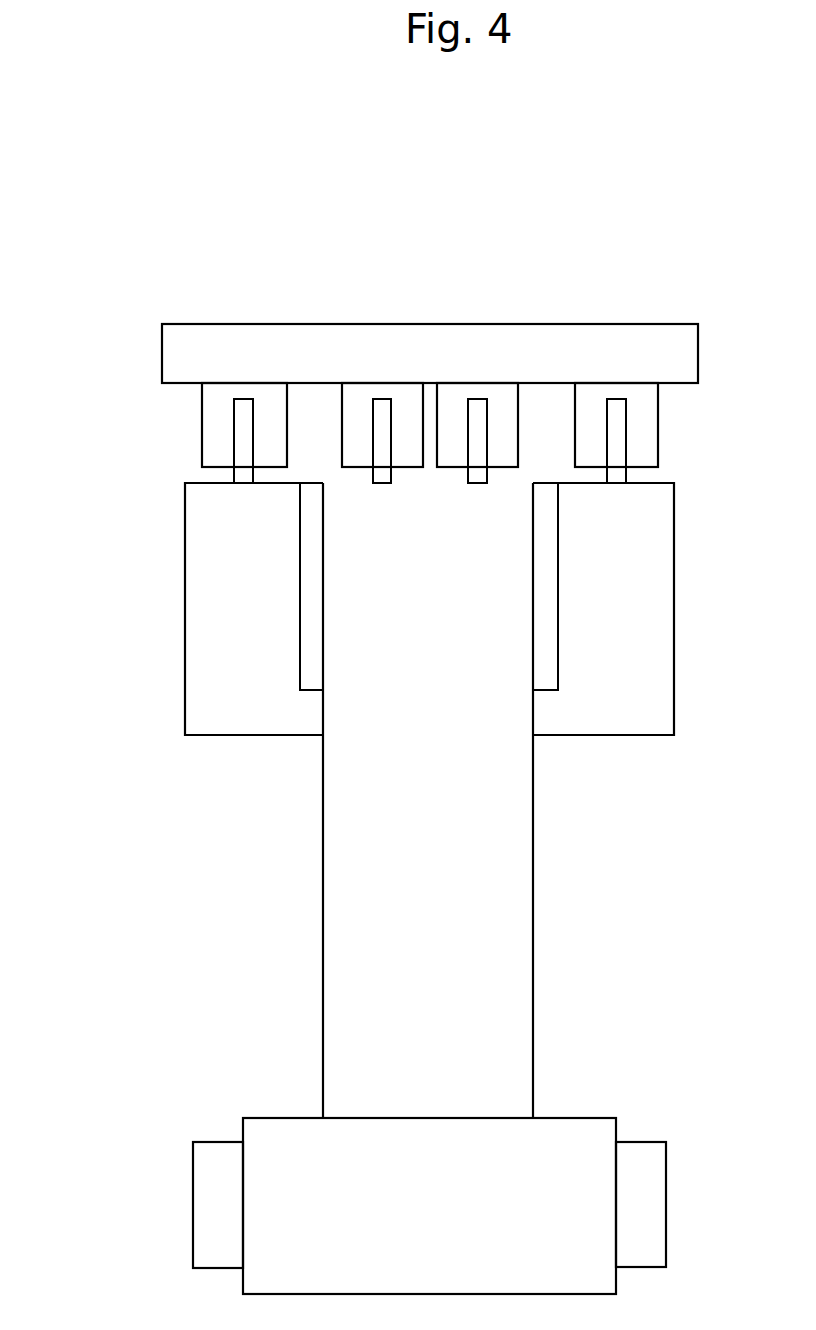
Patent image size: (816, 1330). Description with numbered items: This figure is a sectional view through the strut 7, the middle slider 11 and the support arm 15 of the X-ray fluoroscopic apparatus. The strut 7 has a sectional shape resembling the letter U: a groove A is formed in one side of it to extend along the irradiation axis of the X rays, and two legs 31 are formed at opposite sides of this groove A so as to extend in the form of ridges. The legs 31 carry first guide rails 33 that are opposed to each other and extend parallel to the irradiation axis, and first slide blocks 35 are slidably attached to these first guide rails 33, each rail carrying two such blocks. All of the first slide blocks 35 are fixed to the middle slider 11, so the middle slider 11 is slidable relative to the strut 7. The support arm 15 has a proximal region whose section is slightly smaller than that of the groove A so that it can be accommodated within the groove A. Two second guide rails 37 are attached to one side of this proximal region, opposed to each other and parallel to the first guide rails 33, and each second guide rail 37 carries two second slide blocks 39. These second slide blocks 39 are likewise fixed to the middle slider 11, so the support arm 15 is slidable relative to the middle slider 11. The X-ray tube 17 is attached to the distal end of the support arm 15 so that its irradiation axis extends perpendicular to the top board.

The middle slider 11 is at (698, 338).
The second slide blocks 39 is at (202, 432).
The first slide blocks 35 is at (342, 425).
The second guide rails 37 is at (253, 473).
The first guide rails 33 is at (391, 473).
The strut 7 is at (371, 609).
The legs 31 is at (614, 566).
The groove A is at (314, 640).
The support arm 15 is at (533, 1005).
The X-ray tube 17 is at (666, 1210).